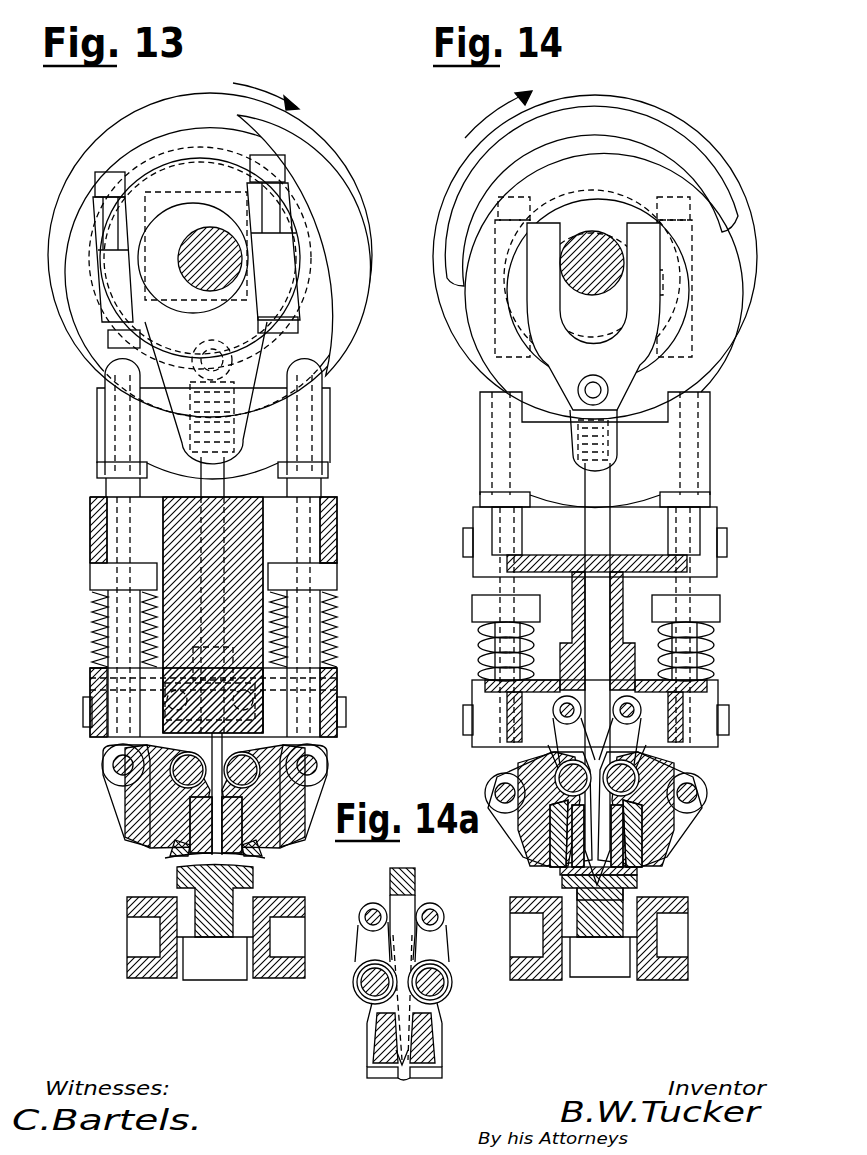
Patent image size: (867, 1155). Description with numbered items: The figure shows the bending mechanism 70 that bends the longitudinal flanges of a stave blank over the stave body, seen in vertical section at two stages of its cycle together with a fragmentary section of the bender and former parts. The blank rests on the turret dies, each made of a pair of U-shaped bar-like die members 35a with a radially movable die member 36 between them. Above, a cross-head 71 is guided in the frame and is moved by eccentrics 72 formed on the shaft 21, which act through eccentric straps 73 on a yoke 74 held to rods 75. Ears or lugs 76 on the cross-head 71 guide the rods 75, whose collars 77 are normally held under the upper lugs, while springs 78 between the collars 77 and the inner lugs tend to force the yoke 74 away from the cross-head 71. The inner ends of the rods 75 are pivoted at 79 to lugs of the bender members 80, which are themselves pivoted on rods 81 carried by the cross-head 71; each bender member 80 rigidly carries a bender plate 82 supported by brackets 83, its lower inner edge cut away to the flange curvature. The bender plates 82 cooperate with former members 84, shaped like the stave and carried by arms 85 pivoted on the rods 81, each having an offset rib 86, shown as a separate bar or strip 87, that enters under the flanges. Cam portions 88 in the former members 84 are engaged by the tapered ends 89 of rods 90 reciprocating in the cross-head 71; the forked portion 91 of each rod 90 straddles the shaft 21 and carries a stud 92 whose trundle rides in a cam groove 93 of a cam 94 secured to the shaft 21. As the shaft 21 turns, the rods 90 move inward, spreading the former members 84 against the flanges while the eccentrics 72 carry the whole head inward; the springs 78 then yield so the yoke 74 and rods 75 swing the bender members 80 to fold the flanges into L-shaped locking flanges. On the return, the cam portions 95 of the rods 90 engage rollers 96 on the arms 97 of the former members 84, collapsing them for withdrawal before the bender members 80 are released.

In FIG. 13, the shaft 21 is at (220, 250).
In FIG. 14, the shaft 21 is at (600, 258).
In FIG. 13, the bar-like die members 35a is at (127, 902).
In FIG. 14, the bar-like die members 35a is at (667, 910).
In FIG. 13, the die member 36 is at (217, 940).
In FIG. 14, the die member 36 is at (590, 945).
In FIG. 13, the bending mechanism 70 is at (172, 617).
In FIG. 14, the bending mechanism 70 is at (630, 627).
In FIG. 13, the cross-head 71 is at (237, 533).
In FIG. 13, the eccentrics 72 is at (165, 218).
In FIG. 13, the eccentric straps 73 is at (177, 360).
In FIG. 14, the eccentric straps 73 is at (620, 430).
In FIG. 13, the yoke 74 is at (268, 427).
In FIG. 14, the yoke 74 is at (655, 462).
In FIG. 13, the rods 75 is at (120, 485).
In FIG. 14, the rods 75 is at (690, 410).
In FIG. 13, the ears or lugs 76 is at (90, 505).
In FIG. 14, the ears or lugs 76 is at (717, 567).
In FIG. 13, the collars 77 is at (90, 580).
In FIG. 14, the collars 77 is at (703, 605).
In FIG. 13, the springs 78 is at (97, 630).
In FIG. 14, the springs 78 is at (713, 640).
In FIG. 13, the pivots 79 is at (115, 763).
In FIG. 14, the pivots 79 is at (693, 790).
In FIG. 13, the bender members 80 is at (283, 797).
In FIG. 14, the bender members 80 is at (650, 858).
In FIG. 13, the rods 81 is at (177, 775).
In FIG. 14, the rods 81 is at (682, 823).
In FIG. 14, the bender plate 82 is at (560, 865).
In FIG. 13, the brackets 83 is at (123, 810).
In FIG. 13, the former members 84 is at (183, 855).
In FIG. 14, the former members 84 is at (643, 870).
In FIG. 14A, the former members 84 is at (440, 1065).
In FIG. 13, the arms 85 is at (148, 848).
In FIG. 14, the arms 85 is at (598, 902).
In FIG. 14A, the arms 85 is at (448, 995).
In FIG. 13, the offset portion or rib 86 is at (213, 855).
In FIG. 14, the offset portion or rib 86 is at (562, 880).
In FIG. 13, the bar or strip 87 is at (175, 857).
In FIG. 14A, the bar or strip 87 is at (443, 1070).
In FIG. 14, the cam portions 88 is at (675, 828).
In FIG. 14A, the cam portions 88 is at (432, 1017).
In FIG. 14, the tapered ends 89 is at (630, 875).
In FIG. 14A, the tapered ends 89 is at (402, 1075).
In FIG. 13, the rods 90 is at (207, 488).
In FIG. 14, the rods 90 is at (585, 532).
In FIG. 14A, the rods 90 is at (393, 883).
In FIG. 14, the forked portion 91 is at (640, 328).
In FIG. 14, the stud 92 is at (590, 375).
In FIG. 13, the cam groove 93 is at (82, 287).
In FIG. 14, the cam groove 93 is at (713, 278).
In FIG. 13, the cam 94 is at (305, 157).
In FIG. 14, the cam 94 is at (680, 138).
In FIG. 14, the cam portions 95 is at (620, 730).
In FIG. 14A, the cam portions 95 is at (415, 945).
In FIG. 13, the rollers 96 is at (148, 702).
In FIG. 14, the rollers 96 is at (603, 682).
In FIG. 14A, the rollers 96 is at (418, 900).
In FIG. 13, the arms 97 is at (180, 735).
In FIG. 14, the arms 97 is at (640, 745).
In FIG. 14A, the arms 97 is at (362, 935).